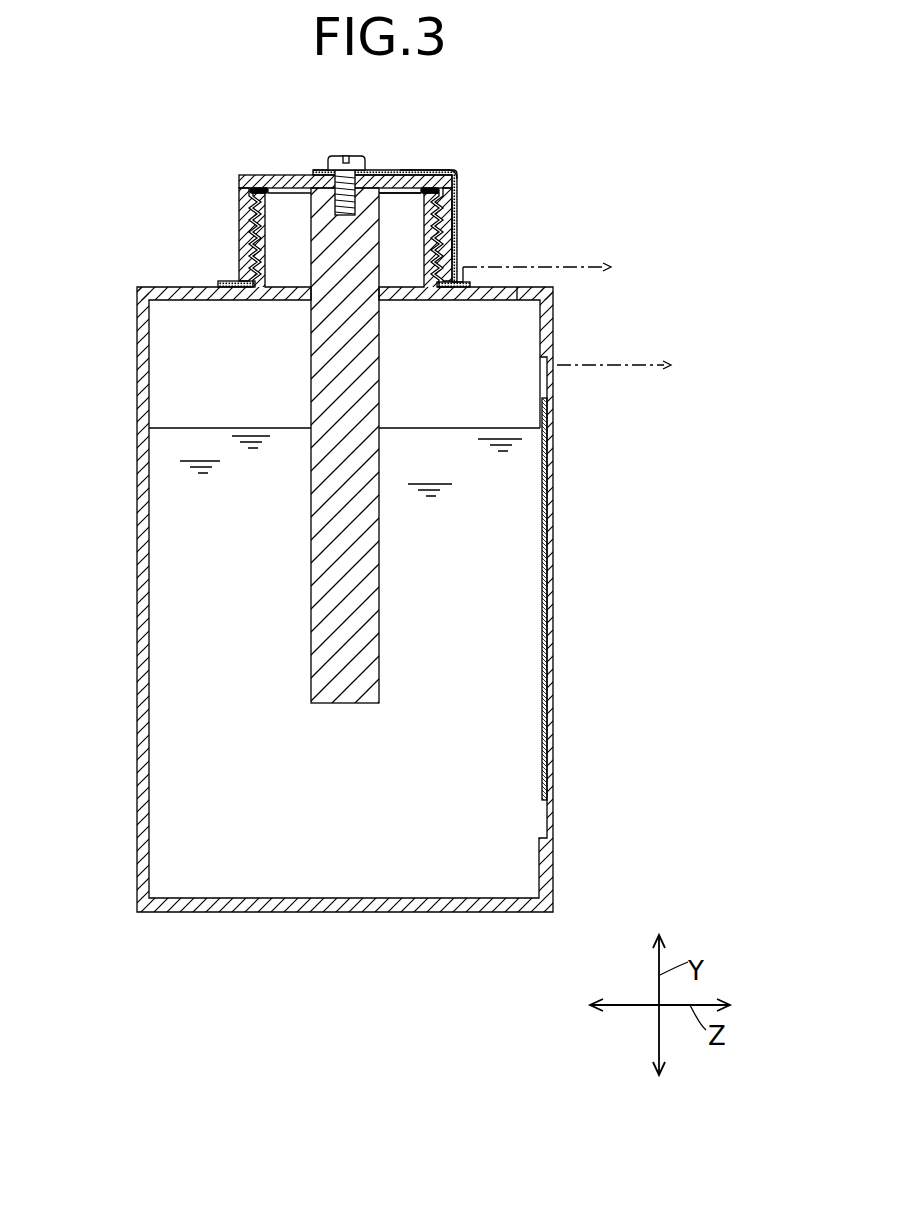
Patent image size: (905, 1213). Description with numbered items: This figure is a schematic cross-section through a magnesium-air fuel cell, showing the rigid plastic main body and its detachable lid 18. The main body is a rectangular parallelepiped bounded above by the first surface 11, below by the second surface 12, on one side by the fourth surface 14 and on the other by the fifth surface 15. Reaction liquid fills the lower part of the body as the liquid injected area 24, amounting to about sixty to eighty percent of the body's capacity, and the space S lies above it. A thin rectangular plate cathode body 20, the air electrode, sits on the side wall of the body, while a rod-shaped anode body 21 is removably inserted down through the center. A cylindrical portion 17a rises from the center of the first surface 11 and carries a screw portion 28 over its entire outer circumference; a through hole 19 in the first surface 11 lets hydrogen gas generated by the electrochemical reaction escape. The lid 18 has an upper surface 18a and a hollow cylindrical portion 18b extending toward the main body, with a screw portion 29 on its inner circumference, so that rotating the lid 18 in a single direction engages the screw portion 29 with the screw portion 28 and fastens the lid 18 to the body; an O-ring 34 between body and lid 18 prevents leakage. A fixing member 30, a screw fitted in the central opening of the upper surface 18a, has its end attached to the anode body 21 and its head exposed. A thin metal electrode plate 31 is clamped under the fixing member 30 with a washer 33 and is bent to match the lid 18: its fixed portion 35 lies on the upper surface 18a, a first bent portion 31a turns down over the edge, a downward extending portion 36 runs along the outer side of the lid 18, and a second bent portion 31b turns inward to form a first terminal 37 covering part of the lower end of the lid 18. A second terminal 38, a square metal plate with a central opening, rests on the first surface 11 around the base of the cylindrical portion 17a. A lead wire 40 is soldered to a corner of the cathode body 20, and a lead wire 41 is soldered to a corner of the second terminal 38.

The first surface 11 is at (349, 589).
The second surface 12 is at (320, 913).
The fourth surface 14 is at (137, 788).
The fifth surface 15 is at (556, 868).
The cylindrical portion 17a is at (266, 248).
The lid 18 is at (268, 188).
The upper surface 18a is at (292, 174).
The hollow cylindrical portion 18b is at (239, 262).
The through hole 19 is at (518, 287).
The cathode body 20 is at (556, 625).
The anode body 21 is at (311, 333).
The liquid injected area 24 is at (195, 600).
The screw portion 28 is at (256, 228).
The screw portion 29 is at (275, 174).
The fixing member 30 is at (342, 155).
The electrode plate 31 is at (414, 223).
The first bent portion 31a is at (454, 171).
The second bent portion 31b is at (457, 290).
The washer 33 is at (325, 170).
The O-ring 34 is at (418, 200).
The fixed portion 35 is at (431, 171).
The downward extending portion 36 is at (456, 222).
The first terminal 37 is at (444, 300).
The second terminal 38 is at (459, 283).
The lead wire 40 is at (651, 364).
The lead wire 41 is at (571, 266).
The space S is at (187, 368).